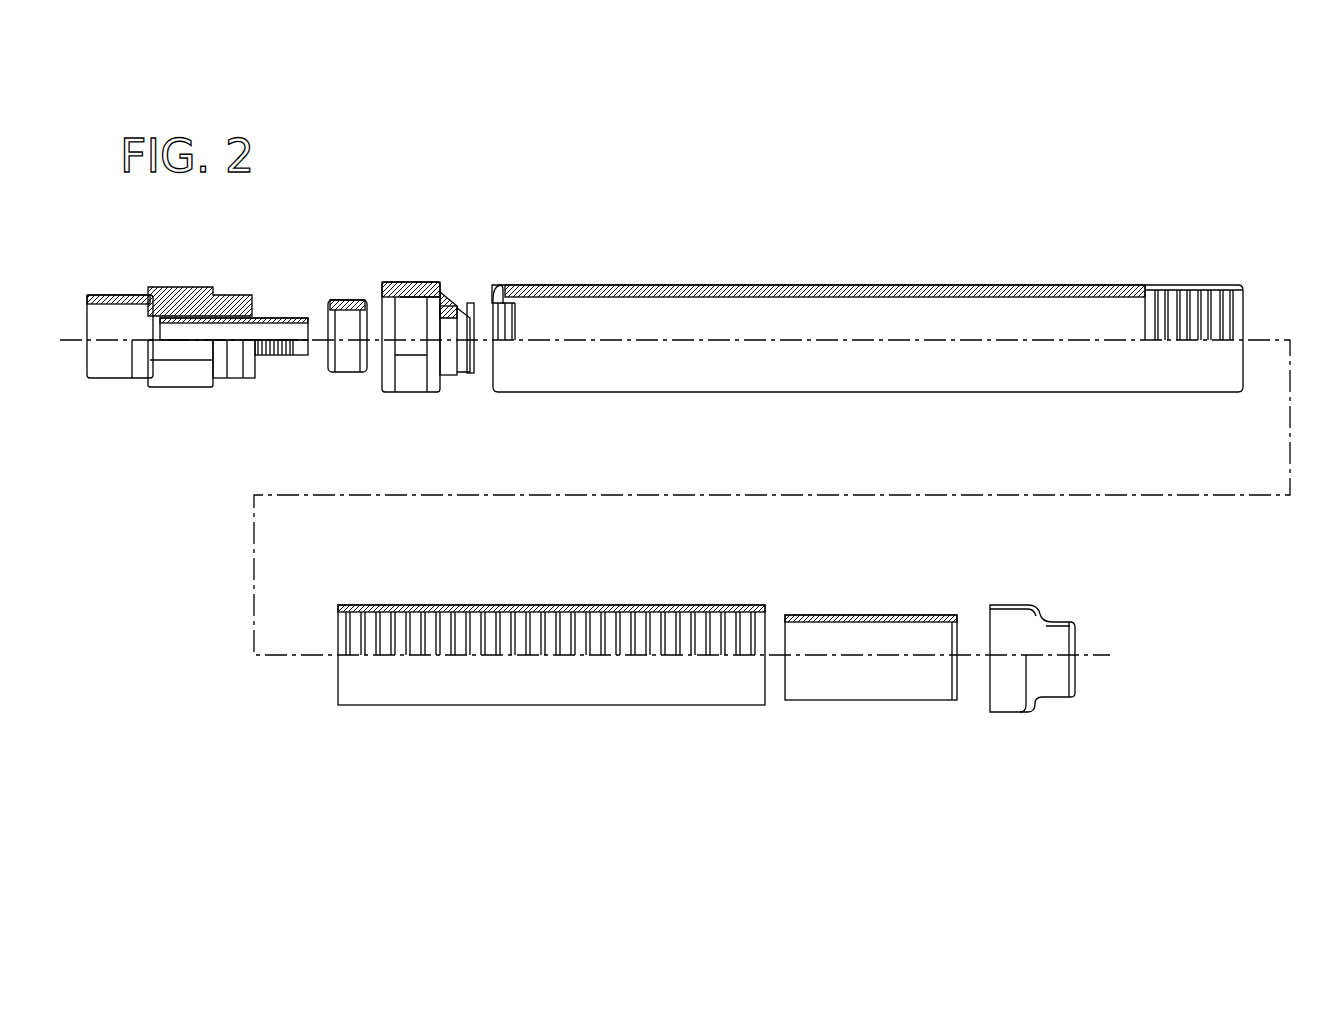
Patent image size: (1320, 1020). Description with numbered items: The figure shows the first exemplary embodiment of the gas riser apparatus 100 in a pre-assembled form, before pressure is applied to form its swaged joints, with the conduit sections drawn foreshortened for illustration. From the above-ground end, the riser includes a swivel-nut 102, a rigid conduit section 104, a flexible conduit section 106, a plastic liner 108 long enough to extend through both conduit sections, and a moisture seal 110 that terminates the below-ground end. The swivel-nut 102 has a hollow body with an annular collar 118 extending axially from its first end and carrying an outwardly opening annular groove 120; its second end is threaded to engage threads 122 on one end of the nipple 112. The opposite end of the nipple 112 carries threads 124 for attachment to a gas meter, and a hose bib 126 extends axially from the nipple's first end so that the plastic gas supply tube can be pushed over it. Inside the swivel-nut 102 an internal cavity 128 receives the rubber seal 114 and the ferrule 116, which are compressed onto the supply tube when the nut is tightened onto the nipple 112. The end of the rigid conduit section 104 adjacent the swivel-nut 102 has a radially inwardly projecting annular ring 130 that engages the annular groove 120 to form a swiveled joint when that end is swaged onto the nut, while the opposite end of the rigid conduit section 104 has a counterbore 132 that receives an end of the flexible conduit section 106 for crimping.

The gas riser apparatus 100 is at (895, 173).
The swivel-nut 102 is at (421, 392).
The rigid conduit section 104 is at (824, 392).
The flexible conduit section 106 is at (545, 705).
The plastic liner 108 is at (870, 700).
The moisture seal 110 is at (1015, 712).
The nipple 112 is at (188, 378).
The rubber seal 114 is at (350, 372).
The ferrule 116 is at (327, 327).
The annular collar 118 is at (486, 300).
The annular groove 120 is at (462, 305).
The threads 122 is at (230, 290).
The threads 124 is at (105, 290).
The hose bib 126 is at (289, 368).
The internal cavity 128 is at (410, 323).
The annular ring 130 is at (537, 283).
The counterbore 132 is at (1158, 300).